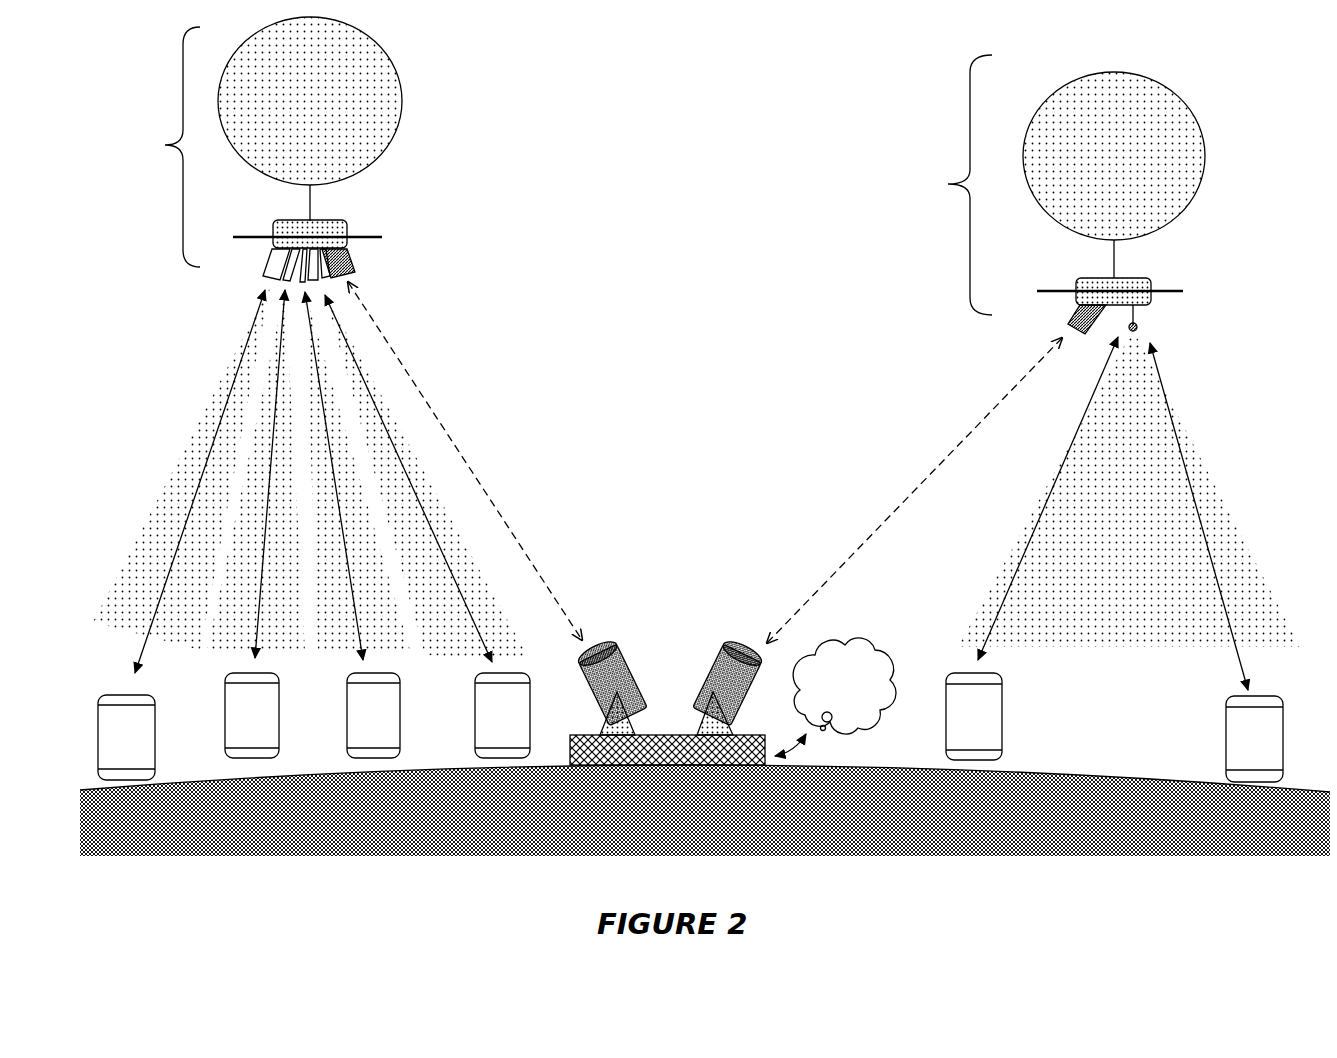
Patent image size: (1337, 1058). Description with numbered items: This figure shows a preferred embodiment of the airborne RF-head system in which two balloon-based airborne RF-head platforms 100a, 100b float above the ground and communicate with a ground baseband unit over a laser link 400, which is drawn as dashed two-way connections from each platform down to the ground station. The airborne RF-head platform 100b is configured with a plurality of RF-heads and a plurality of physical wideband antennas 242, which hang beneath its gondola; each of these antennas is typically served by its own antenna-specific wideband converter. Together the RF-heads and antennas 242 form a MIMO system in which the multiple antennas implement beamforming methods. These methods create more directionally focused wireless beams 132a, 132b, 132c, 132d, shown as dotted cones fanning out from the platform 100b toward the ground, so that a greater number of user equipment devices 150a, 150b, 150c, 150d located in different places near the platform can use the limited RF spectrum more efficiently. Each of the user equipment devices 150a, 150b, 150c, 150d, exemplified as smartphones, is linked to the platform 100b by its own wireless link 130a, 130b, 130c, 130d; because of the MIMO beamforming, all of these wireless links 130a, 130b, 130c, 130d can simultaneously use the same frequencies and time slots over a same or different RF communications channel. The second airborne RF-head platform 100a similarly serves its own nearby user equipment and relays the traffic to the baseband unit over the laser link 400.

The airborne RF-head platform 100a is at (1047, 194).
The airborne RF-head platform 100b is at (257, 172).
The physical wideband antennas 242 is at (253, 270).
The wireless link 130a is at (188, 493).
The wireless link 130b is at (260, 508).
The wireless link 130c is at (343, 473).
The wireless link 130d is at (432, 500).
The wireless beam 132a is at (181, 468).
The wireless beam 132b is at (256, 471).
The wireless beam 132c is at (357, 471).
The wireless beam 132d is at (427, 477).
The user equipment 150a is at (126, 737).
The user equipment 150b is at (252, 715).
The user equipment 150c is at (373, 715).
The user equipment 150d is at (502, 715).
The laser link 400 is at (472, 452).